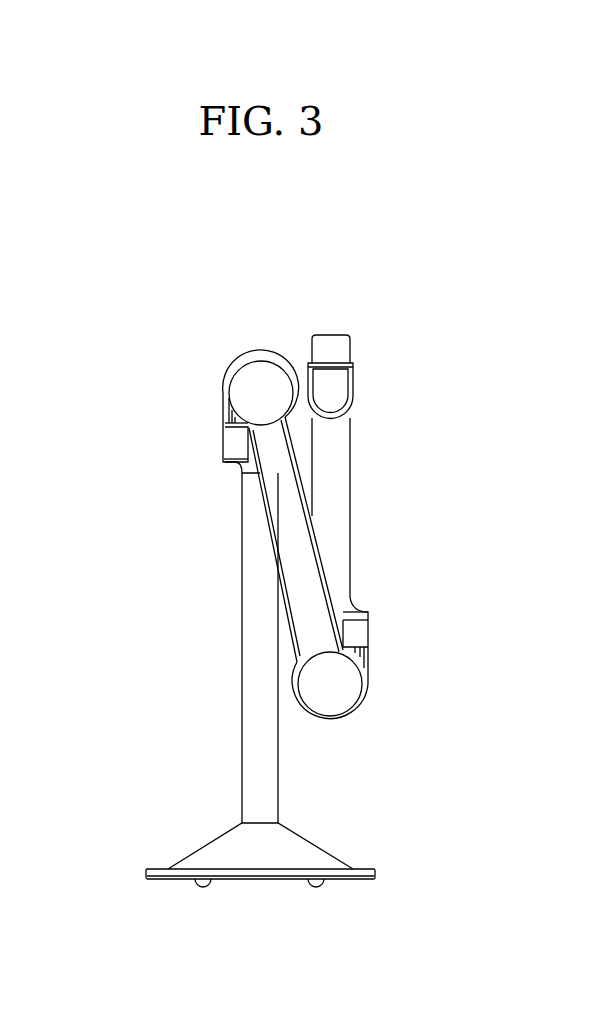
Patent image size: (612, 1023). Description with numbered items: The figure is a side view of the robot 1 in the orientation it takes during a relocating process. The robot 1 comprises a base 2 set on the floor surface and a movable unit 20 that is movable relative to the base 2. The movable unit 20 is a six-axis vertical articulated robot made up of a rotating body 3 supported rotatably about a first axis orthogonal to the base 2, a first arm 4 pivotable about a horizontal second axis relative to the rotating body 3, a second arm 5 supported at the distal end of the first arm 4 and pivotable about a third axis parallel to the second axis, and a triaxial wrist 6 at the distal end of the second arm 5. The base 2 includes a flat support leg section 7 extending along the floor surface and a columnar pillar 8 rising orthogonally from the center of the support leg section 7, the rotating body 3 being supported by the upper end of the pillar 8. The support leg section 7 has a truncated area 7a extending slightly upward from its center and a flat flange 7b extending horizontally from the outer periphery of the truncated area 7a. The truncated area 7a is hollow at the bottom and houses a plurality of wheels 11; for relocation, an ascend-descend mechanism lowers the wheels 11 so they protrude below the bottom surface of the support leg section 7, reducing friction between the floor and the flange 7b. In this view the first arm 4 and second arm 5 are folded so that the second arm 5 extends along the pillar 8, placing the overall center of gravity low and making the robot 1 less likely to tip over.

The robot 1 is at (83, 307).
The base 2 is at (200, 802).
The rotating body 3 is at (223, 445).
The first arm 4 is at (251, 523).
The second arm 5 is at (384, 651).
The triaxial wrist 6 is at (331, 320).
The support leg section 7 is at (176, 845).
The truncated area 7a is at (315, 840).
The flange 7b is at (365, 868).
The pillar 8 is at (242, 672).
The wheels 11 is at (203, 886).
The movable unit 20 is at (205, 348).